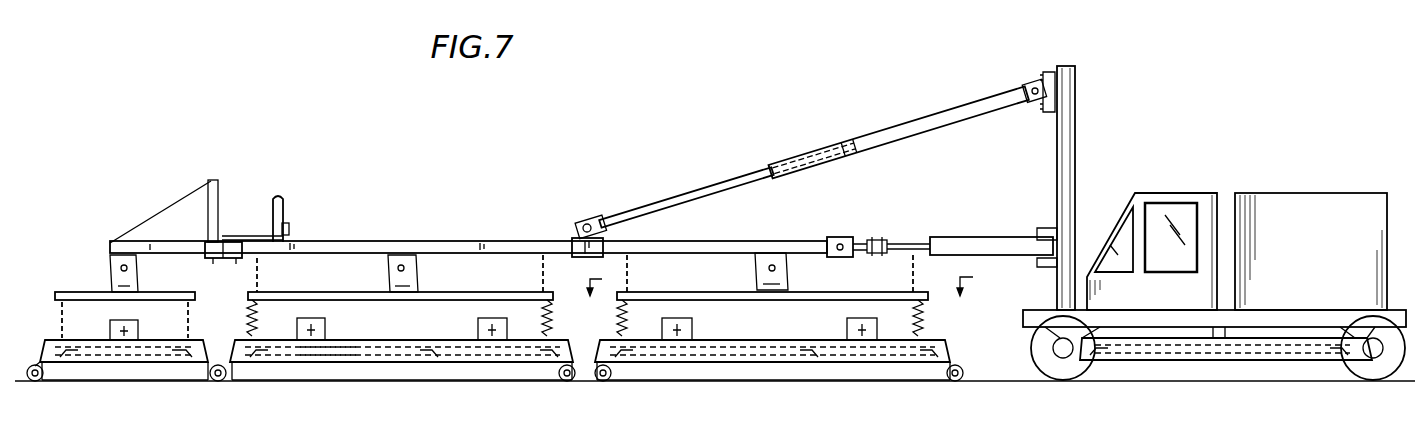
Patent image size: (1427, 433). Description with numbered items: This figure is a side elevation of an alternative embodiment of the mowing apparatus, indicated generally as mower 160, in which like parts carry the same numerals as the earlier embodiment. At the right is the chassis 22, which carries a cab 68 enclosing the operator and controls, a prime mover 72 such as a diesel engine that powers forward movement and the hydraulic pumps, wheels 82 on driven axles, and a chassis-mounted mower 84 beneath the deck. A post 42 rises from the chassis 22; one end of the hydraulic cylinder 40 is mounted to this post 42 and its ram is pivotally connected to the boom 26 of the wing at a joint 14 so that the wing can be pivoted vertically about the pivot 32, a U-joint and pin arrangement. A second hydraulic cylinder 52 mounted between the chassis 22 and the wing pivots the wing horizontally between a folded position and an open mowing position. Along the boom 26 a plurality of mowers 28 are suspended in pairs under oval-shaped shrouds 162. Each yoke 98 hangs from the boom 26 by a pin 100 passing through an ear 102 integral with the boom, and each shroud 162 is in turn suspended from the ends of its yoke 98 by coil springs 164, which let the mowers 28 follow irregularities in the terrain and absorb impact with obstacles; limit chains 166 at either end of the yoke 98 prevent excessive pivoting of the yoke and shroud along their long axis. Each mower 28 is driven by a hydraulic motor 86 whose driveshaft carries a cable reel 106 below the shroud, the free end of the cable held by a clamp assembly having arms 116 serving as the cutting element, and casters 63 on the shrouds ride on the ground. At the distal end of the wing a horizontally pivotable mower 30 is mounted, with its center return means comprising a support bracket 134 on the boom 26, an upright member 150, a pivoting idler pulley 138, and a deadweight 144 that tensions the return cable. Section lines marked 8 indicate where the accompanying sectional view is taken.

The pivot joint 14 is at (548, 232).
The chassis 22 is at (1313, 318).
The boom 26 is at (403, 240).
The mower 28 is at (947, 345).
The mower 30 is at (93, 270).
The pivot 32 is at (850, 236).
The hydraulic cylinder 40 is at (938, 108).
The post 42 is at (1075, 158).
The second hydraulic cylinder 52 is at (983, 237).
The caster 63 is at (212, 376).
The cab 68 is at (1140, 305).
The prime mover 72 is at (1290, 267).
The wheels 82 is at (1372, 372).
The mower 84 is at (1152, 360).
The hydraulic motor 86 is at (139, 328).
The yoke 98 is at (826, 292).
The pin 100 is at (418, 273).
The ear 102 is at (757, 277).
The cable reel 106 is at (300, 365).
The arms 116 is at (428, 346).
The support bracket 134 is at (285, 203).
The pivoting idler pulley 138 is at (778, 136).
The deadweight 144 is at (292, 228).
The post 150 is at (213, 180).
The mowing apparatus 160 is at (1214, 227).
The oval-shaped shroud 162 is at (960, 354).
The coil springs 164 is at (247, 320).
The limit chains 166 is at (540, 277).
The section line 8 is at (782, 297).